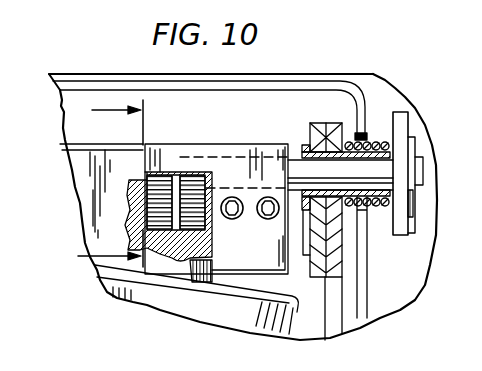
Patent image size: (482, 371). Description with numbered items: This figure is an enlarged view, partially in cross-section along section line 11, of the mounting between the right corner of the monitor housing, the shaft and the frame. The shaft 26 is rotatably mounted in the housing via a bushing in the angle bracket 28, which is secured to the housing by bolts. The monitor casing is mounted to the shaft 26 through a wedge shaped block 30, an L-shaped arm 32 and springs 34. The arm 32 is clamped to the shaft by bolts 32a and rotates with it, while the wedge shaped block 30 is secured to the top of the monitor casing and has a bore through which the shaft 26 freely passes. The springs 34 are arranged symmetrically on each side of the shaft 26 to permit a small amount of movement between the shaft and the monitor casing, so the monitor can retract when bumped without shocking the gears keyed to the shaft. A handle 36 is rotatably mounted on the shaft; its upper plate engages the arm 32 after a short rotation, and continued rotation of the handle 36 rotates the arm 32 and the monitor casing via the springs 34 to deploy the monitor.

The section line 11- 11 is at (97, 183).
The shaft 26 is at (302, 170).
The angle bracket 28 is at (402, 112).
The wedge shaped block 30 is at (78, 158).
The L-shaped arm 32 is at (245, 146).
The bolts 32a is at (232, 220).
The springs 34 is at (193, 178).
The handle 36 is at (330, 292).